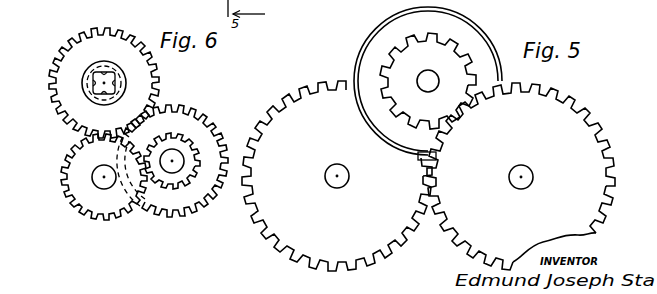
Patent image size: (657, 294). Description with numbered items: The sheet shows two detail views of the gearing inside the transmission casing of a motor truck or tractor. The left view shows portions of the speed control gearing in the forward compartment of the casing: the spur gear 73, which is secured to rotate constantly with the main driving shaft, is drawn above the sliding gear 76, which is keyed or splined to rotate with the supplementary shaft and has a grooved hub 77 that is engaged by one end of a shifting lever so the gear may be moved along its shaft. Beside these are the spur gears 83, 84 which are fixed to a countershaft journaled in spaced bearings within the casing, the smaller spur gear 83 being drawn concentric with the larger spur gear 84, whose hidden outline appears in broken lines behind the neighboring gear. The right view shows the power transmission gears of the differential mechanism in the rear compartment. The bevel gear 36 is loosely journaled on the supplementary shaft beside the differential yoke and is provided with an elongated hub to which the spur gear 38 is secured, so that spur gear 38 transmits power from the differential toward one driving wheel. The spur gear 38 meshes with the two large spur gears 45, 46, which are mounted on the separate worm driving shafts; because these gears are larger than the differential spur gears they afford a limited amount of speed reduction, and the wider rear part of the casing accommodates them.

In FIG. 6, the grooved hub 77 is at (84, 61).
In FIG. 6, the sliding gear 76 is at (63, 82).
In FIG. 6, the spur gear 73 is at (82, 160).
In FIG. 6, the spur gear 84 is at (192, 122).
In FIG. 6, the spur gear 83 is at (181, 176).
In FIG. 5, the bevel gear 36 is at (365, 46).
In FIG. 5, the spur gear 38 is at (428, 81).
In FIG. 5, the spur gear 46 is at (337, 176).
In FIG. 5, the spur gear 45 is at (521, 176).